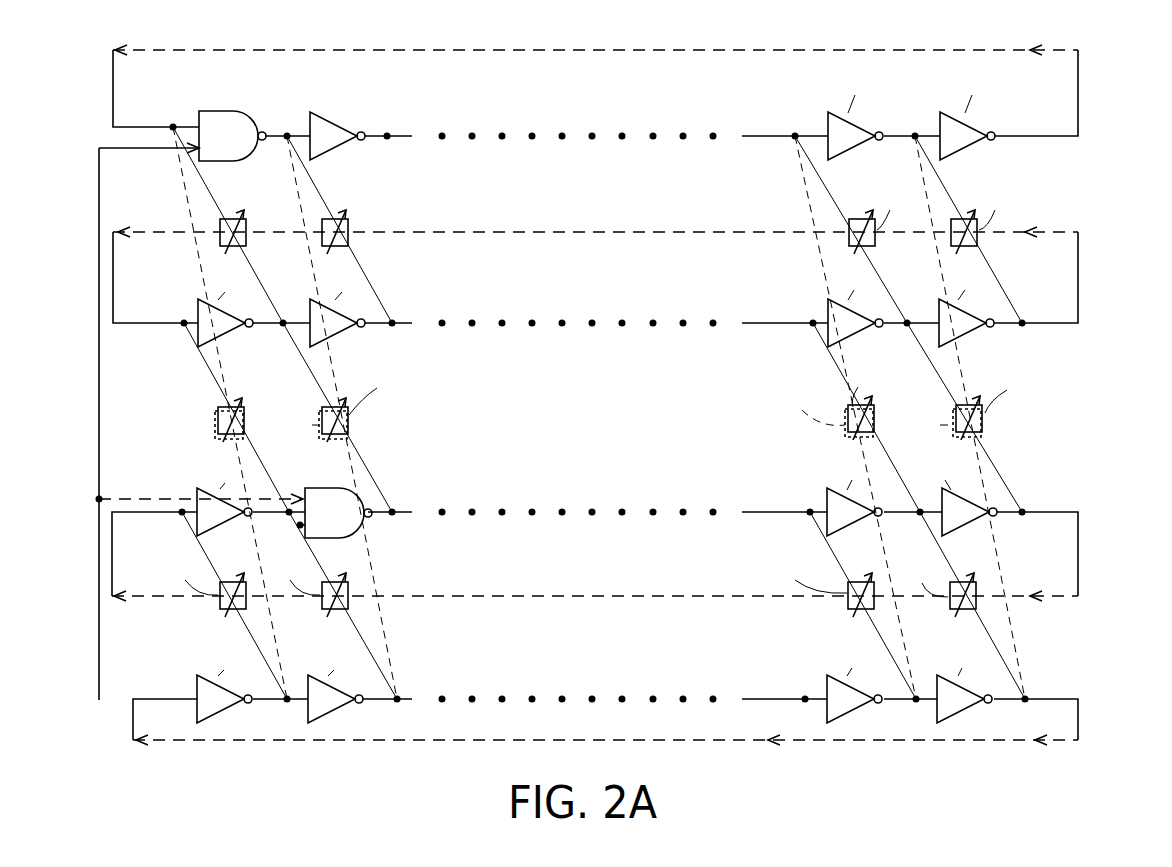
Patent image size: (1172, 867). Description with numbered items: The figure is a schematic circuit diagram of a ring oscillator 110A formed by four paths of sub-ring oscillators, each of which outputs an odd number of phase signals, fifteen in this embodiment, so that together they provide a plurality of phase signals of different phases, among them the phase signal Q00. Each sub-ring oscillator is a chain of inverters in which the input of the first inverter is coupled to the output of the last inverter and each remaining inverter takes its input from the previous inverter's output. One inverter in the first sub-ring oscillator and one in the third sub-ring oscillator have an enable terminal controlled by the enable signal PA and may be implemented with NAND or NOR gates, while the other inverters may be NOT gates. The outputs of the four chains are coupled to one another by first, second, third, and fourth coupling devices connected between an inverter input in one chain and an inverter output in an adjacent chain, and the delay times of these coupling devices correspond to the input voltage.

The ring oscillator 110A is at (614, 424).
The enable signal PA is at (194, 442).
The phase signal Q00 is at (158, 111).